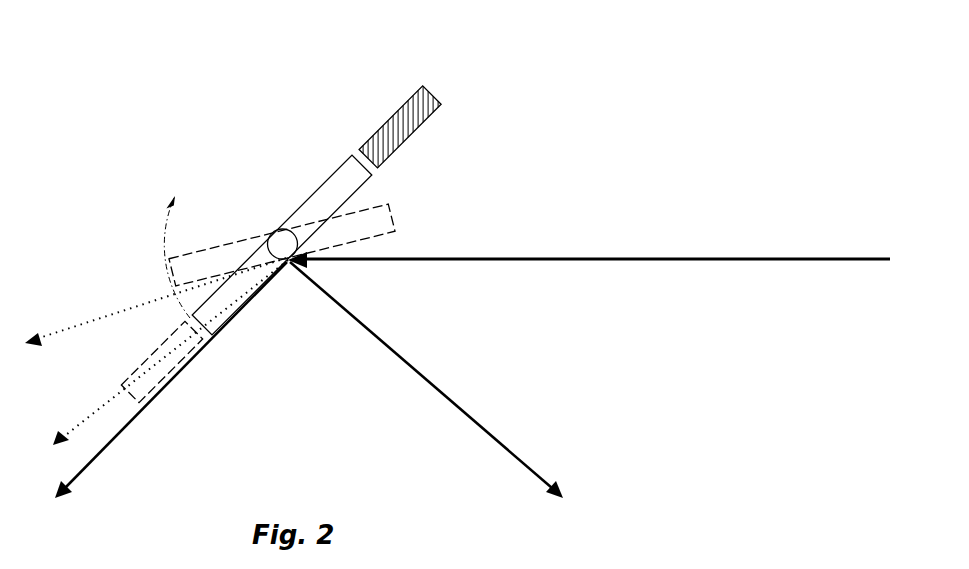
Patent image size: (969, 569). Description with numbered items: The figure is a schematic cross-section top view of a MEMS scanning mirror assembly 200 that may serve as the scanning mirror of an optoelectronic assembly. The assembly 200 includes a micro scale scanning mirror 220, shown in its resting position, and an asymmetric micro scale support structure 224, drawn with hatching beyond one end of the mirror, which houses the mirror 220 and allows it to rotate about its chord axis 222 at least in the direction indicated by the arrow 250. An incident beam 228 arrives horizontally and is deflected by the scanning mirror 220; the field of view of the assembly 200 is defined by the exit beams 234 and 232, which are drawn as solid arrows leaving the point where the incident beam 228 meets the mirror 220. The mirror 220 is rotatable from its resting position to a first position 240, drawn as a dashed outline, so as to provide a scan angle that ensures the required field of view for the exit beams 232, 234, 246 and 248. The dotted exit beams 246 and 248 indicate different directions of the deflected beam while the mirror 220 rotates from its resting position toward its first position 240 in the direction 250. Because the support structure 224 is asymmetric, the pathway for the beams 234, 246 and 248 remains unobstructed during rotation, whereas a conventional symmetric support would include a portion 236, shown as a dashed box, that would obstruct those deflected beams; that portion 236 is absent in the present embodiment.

The MEMS scanning mirror assembly 200 is at (638, 70).
The micro scale scanning mirror 220 is at (313, 192).
The chord axis 222 is at (273, 231).
The asymmetric micro scale support structure 224 is at (443, 100).
The incident beam 228 is at (652, 257).
The exit beam 232 is at (512, 447).
The exit beam 234 is at (176, 386).
The portion of a conventional symmetric support structure 236 is at (153, 380).
The first position of the mirror 240 is at (397, 212).
The exit beam 246 is at (82, 418).
The exit beam 248 is at (95, 320).
The direction of rotation 250 is at (165, 210).